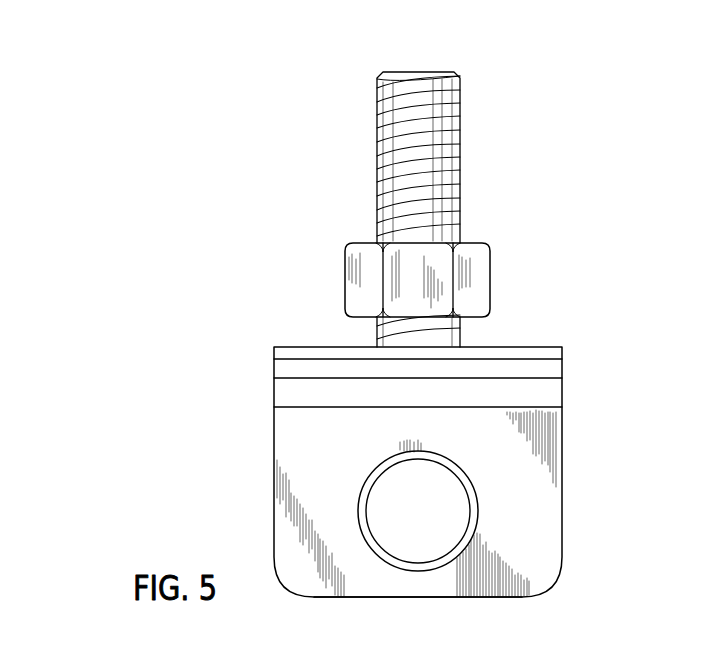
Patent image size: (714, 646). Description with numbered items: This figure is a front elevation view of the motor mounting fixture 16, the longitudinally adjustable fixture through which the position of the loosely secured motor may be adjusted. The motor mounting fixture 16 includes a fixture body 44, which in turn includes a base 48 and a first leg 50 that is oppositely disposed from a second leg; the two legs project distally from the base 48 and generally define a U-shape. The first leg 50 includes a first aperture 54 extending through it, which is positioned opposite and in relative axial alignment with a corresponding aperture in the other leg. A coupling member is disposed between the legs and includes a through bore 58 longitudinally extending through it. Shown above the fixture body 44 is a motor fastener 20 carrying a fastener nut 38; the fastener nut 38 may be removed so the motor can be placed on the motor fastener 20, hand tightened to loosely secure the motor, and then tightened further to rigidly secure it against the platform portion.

The motor mounting fixture 16 is at (305, 151).
The motor fastener 20 is at (461, 147).
The fastener nut 38 is at (490, 258).
The fixture body 44 is at (296, 342).
The base 48 is at (513, 346).
The first leg 50 is at (478, 598).
The first aperture 54 is at (410, 563).
The through bore 58 is at (418, 511).